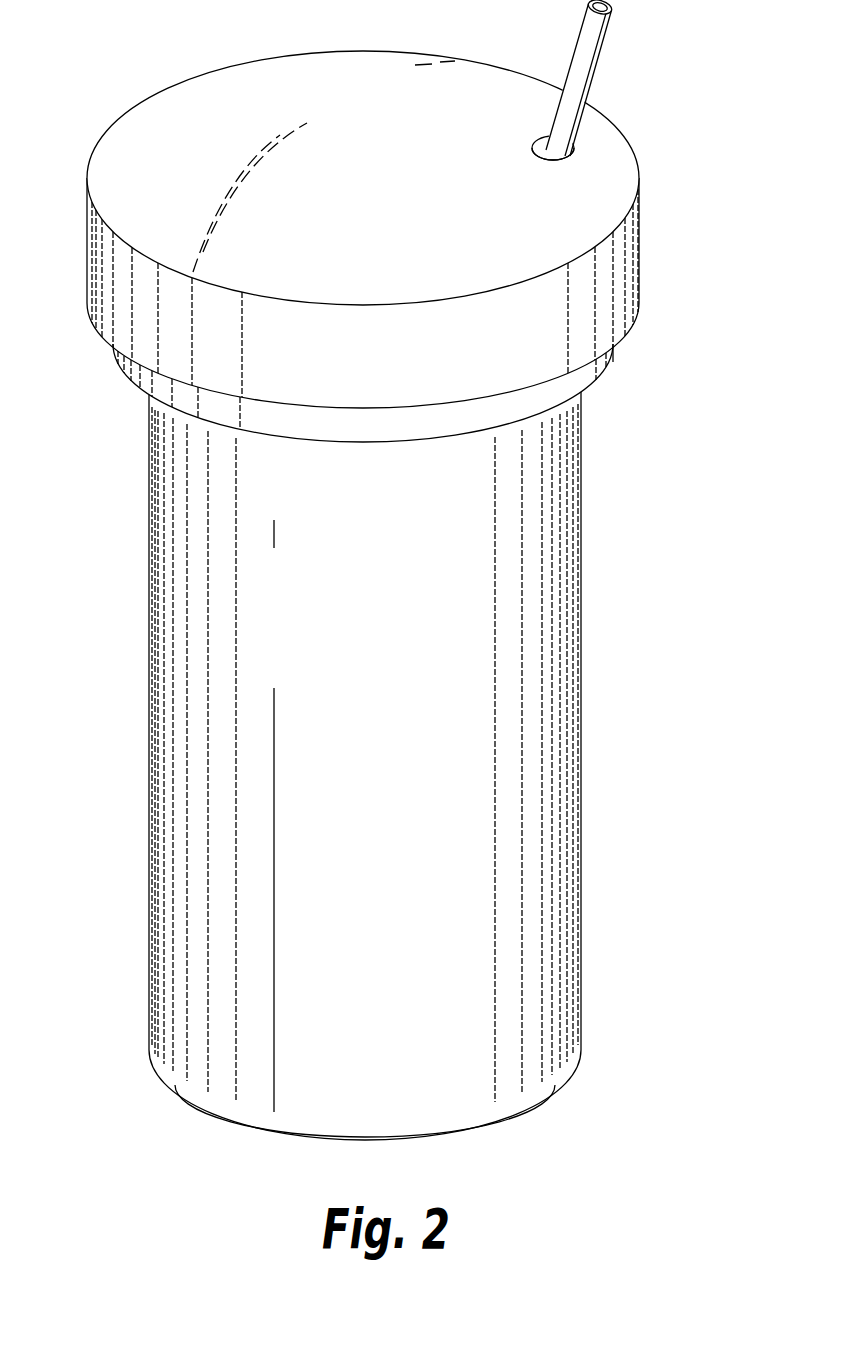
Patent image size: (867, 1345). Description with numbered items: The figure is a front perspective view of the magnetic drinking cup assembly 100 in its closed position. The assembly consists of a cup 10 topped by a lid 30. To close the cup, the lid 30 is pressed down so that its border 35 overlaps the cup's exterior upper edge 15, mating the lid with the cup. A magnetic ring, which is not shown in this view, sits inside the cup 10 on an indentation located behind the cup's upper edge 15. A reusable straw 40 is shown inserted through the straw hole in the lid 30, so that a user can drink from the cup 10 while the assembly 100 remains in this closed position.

The magnetic drinking cup assembly 100 is at (398, 570).
The cup 10 is at (135, 685).
The exterior upper edge 15 is at (617, 373).
The lid 30 is at (414, 229).
The border 35 is at (660, 253).
The reusable straw 40 is at (623, 31).